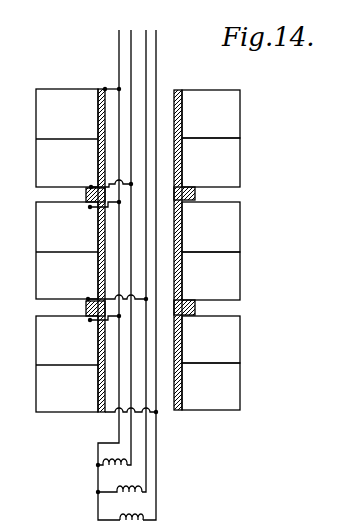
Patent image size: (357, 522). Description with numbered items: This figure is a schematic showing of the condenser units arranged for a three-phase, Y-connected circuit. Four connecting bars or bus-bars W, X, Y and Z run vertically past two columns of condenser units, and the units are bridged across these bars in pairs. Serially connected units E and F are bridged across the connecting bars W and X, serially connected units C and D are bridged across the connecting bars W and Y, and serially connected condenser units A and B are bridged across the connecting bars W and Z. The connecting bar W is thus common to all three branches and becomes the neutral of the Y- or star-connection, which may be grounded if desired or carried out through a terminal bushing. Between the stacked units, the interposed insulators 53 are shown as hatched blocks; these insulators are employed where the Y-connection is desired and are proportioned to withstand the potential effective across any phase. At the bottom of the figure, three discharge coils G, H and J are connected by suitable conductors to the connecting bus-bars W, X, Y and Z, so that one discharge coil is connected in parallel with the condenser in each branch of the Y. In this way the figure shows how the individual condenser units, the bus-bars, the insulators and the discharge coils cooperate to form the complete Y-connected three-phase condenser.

The interposed insulator 53 is at (195, 196).
The condenser unit A is at (211, 386).
The condenser unit B is at (211, 339).
The condenser unit C is at (211, 276).
The condenser unit D is at (211, 227).
The condenser unit E is at (211, 162).
The condenser unit F is at (211, 114).
The discharge coil G is at (112, 455).
The discharge coil H is at (120, 482).
The discharge coil J is at (131, 510).
The connecting bar W is at (112, 267).
The connecting bar X is at (131, 239).
The connecting bar Y is at (146, 253).
The connecting bar Z is at (152, 267).